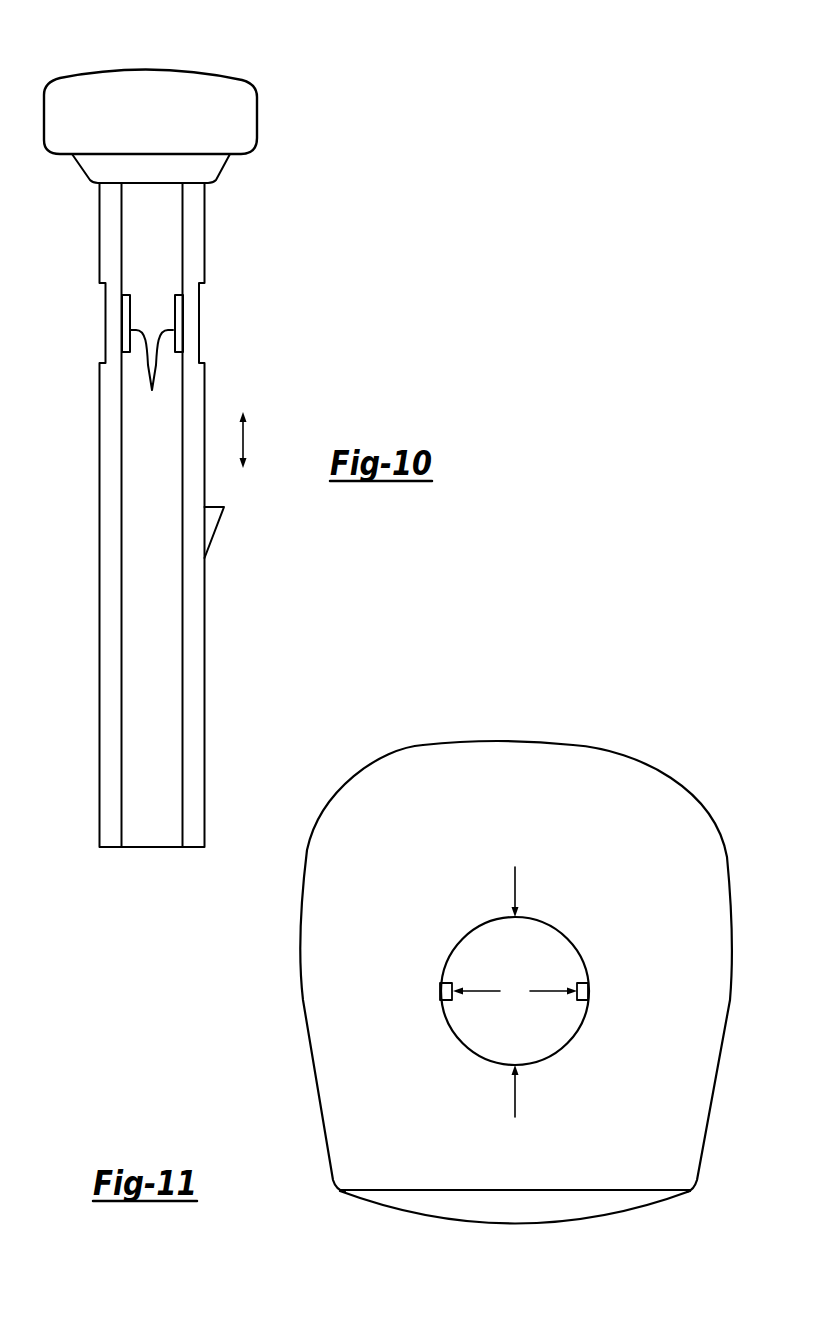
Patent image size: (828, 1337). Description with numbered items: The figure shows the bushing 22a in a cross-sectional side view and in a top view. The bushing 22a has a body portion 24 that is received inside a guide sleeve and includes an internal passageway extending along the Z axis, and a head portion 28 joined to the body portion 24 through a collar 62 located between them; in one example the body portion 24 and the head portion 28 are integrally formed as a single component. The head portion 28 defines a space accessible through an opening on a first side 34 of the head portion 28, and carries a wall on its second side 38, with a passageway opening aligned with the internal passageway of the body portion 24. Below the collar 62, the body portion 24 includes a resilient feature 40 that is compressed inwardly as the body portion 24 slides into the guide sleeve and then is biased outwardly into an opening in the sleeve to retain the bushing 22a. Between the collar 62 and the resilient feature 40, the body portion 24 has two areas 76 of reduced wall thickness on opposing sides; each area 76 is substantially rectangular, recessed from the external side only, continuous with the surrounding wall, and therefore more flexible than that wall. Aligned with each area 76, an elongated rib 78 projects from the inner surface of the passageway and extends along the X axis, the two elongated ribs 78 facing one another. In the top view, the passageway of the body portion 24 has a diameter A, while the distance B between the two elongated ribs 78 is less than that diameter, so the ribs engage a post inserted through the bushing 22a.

In FIG. 10, the bushing 22a is at (295, 82).
In FIG. 10, the head portion 28 is at (230, 82).
In FIG. 11, the head portion 28 is at (516, 965).
In FIG. 10, the collar 62 is at (228, 165).
In FIG. 10, the body portion 24 is at (204, 248).
In FIG. 11, the body portion 24 is at (563, 933).
In FIG. 10, the area having a reduced wall thickness 76 is at (105, 323).
In FIG. 11, the area having a reduced wall thickness 76 is at (440, 991).
In FIG. 10, the elongated rib 78 is at (151, 376).
In FIG. 10, the resilient feature 40 is at (213, 537).
In FIG. 11, the second side 38 is at (487, 742).
In FIG. 11, the first side 34 is at (587, 1220).